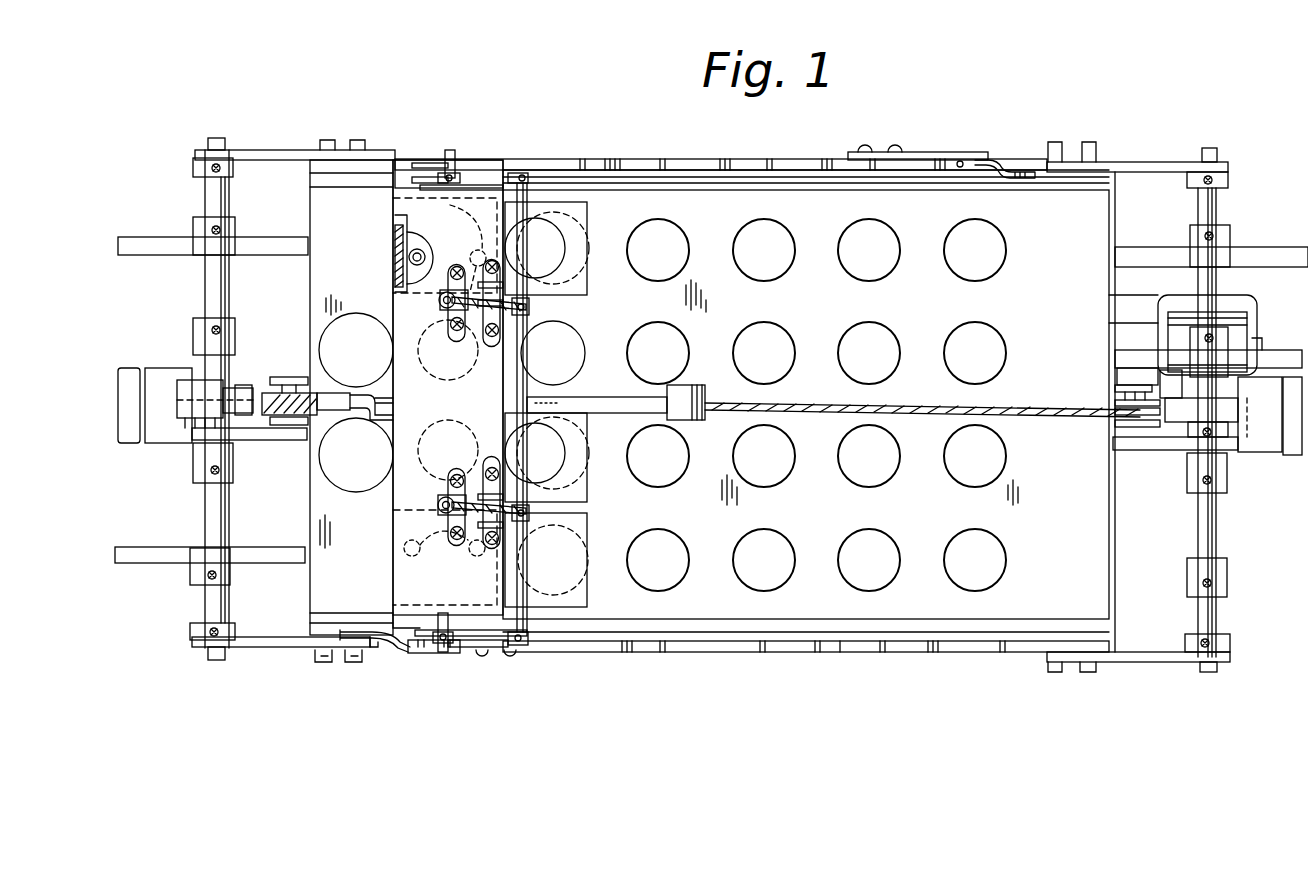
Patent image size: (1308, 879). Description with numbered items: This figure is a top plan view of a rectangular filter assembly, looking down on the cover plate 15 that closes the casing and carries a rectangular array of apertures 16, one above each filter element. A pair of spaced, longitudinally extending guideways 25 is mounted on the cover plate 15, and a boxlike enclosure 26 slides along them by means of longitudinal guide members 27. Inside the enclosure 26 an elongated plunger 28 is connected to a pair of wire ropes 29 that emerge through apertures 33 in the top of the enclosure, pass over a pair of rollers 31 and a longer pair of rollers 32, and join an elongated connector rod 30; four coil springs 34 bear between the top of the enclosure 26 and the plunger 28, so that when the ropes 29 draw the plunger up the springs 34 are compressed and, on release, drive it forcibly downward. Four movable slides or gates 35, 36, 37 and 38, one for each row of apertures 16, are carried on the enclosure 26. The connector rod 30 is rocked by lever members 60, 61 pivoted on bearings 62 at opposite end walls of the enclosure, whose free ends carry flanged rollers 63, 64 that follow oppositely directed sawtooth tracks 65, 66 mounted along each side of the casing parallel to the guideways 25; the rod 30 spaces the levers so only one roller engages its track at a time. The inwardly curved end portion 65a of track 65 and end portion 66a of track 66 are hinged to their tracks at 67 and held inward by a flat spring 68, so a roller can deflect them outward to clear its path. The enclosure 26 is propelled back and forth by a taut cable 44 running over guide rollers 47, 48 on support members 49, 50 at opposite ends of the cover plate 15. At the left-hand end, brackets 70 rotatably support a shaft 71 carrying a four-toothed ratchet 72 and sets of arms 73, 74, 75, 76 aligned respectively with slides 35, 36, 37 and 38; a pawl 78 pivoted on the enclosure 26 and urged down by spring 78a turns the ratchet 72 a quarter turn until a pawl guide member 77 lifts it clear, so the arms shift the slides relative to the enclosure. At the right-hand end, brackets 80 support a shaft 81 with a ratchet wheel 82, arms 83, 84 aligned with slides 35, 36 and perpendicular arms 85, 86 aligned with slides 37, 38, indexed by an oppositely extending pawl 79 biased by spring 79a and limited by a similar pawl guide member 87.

The cover plate 15 is at (1025, 605).
The apertures 16 is at (960, 325).
The guideways 25 is at (683, 176).
The enclosure 26 is at (385, 458).
The longitudinal guide members 27 is at (470, 182).
The plunger 28 is at (400, 243).
The wire ropes 29 is at (463, 312).
The connector rod 30 is at (528, 322).
The rollers 31 is at (440, 308).
The rollers 32 is at (470, 340).
The apertures 33 is at (438, 300).
The coil springs 34 is at (422, 253).
The movable slide 35 is at (575, 580).
The movable slide 36 is at (605, 490).
The movable slide 37 is at (322, 316).
The movable slide 38 is at (608, 284).
The cable 44 is at (1025, 397).
The guide roller 47 is at (272, 393).
The guide roller 48 is at (1113, 415).
The support member 49 is at (283, 425).
The support member 50 is at (1113, 430).
The lever member 60 is at (480, 185).
The lever member 61 is at (478, 650).
The bearings 62 is at (452, 152).
The flanged roller 63 is at (432, 163).
The flanged roller 64 is at (425, 653).
The track 65 is at (600, 160).
The end portion of track 65a is at (1000, 160).
The track 66 is at (705, 645).
The end portion of track 66a is at (375, 642).
The hinge 67 is at (960, 152).
The flat spring 68 is at (905, 152).
The brackets 70 is at (272, 150).
The shaft 71 is at (208, 604).
The ratchet 72 is at (242, 390).
The arms 73 is at (155, 555).
The arms 74 is at (215, 452).
The arms 75 is at (208, 350).
The arms 76 is at (160, 247).
The pawl guide member 77 is at (135, 378).
The pawl 78 is at (200, 404).
The spring 78a is at (372, 418).
The pawl 79 is at (610, 388).
The spring 79a is at (556, 395).
The brackets 80 is at (1140, 162).
The shaft 81 is at (1212, 616).
The ratchet wheel 82 is at (1185, 415).
The arms 83 is at (1215, 565).
The arms 84 is at (1215, 462).
The arms 85 is at (1280, 350).
The arms 86 is at (1275, 260).
The pawl guide member 87 is at (1268, 440).